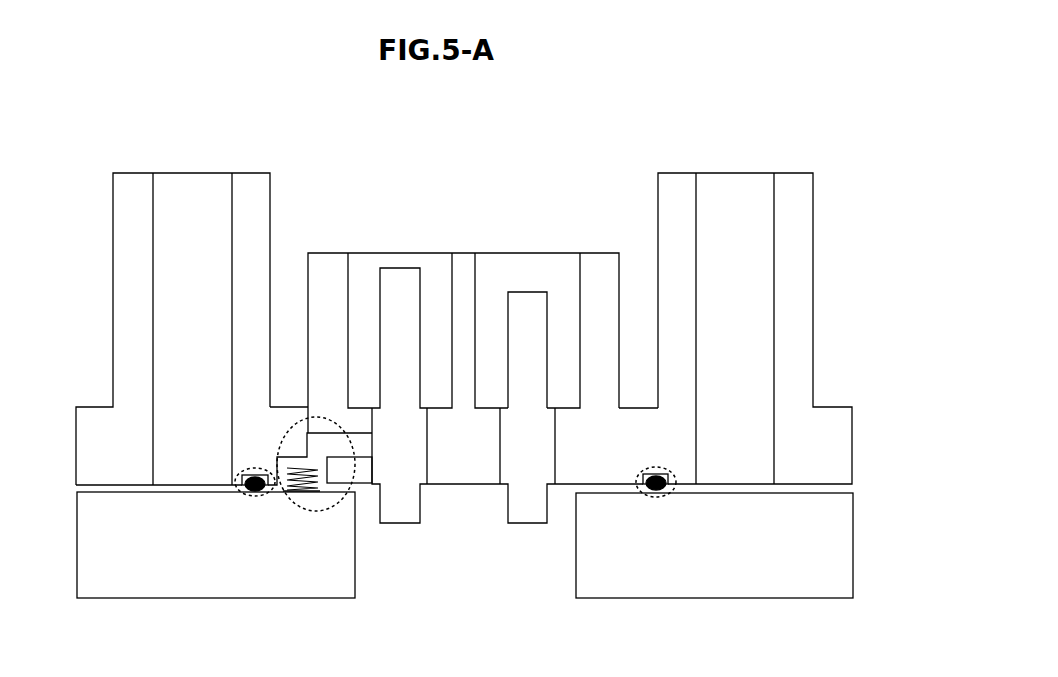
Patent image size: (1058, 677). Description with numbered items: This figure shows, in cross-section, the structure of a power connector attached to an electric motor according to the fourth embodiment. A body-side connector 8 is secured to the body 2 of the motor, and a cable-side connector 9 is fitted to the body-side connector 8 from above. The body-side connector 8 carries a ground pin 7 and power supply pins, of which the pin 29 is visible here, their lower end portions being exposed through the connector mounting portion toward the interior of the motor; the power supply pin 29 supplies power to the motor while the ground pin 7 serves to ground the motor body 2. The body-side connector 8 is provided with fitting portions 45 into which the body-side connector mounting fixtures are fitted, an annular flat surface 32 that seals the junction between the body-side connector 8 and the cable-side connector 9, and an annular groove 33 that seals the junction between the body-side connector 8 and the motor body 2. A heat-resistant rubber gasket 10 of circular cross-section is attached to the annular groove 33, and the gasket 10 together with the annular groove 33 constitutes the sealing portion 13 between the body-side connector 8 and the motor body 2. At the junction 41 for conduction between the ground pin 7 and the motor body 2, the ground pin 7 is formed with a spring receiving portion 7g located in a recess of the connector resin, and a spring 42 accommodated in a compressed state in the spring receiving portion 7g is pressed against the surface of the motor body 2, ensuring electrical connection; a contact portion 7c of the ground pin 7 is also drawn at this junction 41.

The motor body 2 is at (782, 600).
The ground pin 7 is at (393, 297).
The contact portion 7c is at (335, 453).
The spring receiving portion 7g is at (283, 468).
The body-side connector 8 is at (133, 242).
The cable-side connector 9 is at (480, 335).
The gasket 10 is at (238, 493).
The sealing portion 13 is at (247, 502).
The power supply pin 29 is at (513, 320).
The annular flat surface 32 is at (290, 405).
The annular groove 33 is at (265, 493).
The junction 41 is at (323, 513).
The spring 42 is at (300, 493).
The fitting portions 45 is at (195, 222).